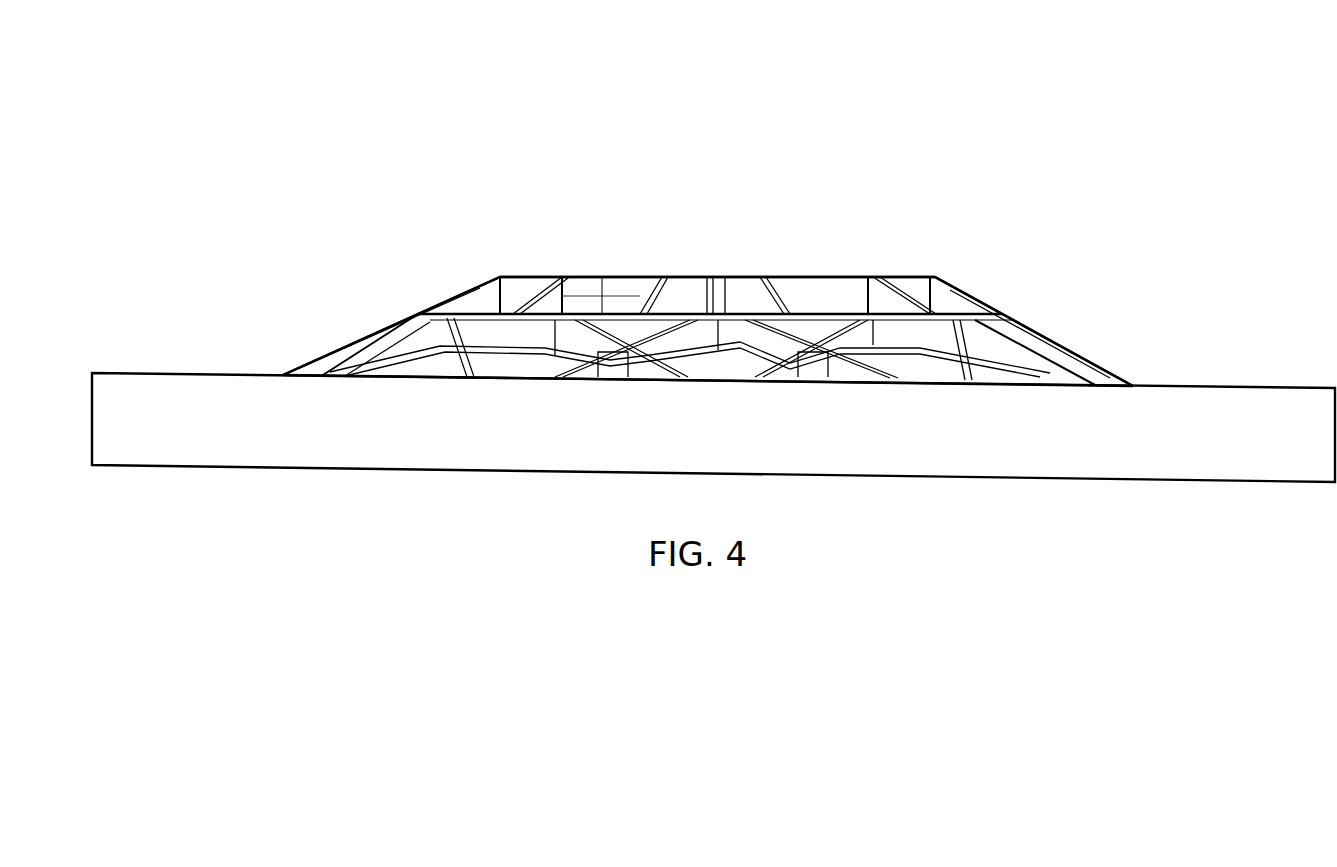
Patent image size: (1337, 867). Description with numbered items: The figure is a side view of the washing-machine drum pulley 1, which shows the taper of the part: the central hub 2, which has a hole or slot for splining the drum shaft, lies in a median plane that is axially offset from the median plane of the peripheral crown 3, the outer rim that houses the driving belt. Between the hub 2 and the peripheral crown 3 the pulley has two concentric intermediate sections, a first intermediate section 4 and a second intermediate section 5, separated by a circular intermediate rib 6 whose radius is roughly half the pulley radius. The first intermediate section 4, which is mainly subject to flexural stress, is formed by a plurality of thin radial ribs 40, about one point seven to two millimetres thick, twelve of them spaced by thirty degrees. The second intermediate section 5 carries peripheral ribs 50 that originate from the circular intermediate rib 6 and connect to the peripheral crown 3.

The pulley 1 is at (278, 190).
The central hub 2 is at (718, 278).
The peripheral crown 3 is at (116, 425).
The first intermediate section 4 is at (486, 255).
The second intermediate section 5 is at (296, 345).
The circular intermediate rib 6 is at (600, 300).
The radial ribs 40 is at (972, 312).
The peripheral ribs 50 is at (1115, 360).